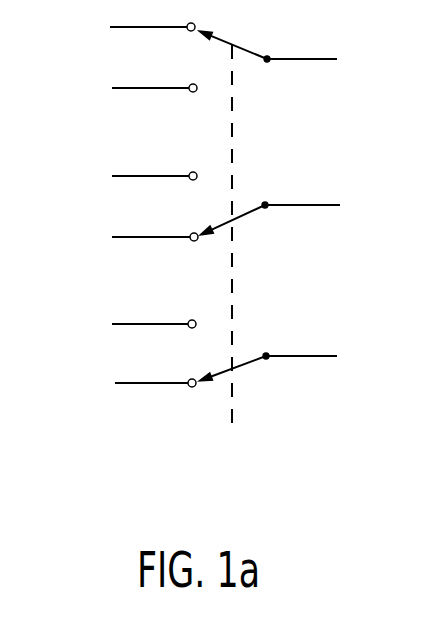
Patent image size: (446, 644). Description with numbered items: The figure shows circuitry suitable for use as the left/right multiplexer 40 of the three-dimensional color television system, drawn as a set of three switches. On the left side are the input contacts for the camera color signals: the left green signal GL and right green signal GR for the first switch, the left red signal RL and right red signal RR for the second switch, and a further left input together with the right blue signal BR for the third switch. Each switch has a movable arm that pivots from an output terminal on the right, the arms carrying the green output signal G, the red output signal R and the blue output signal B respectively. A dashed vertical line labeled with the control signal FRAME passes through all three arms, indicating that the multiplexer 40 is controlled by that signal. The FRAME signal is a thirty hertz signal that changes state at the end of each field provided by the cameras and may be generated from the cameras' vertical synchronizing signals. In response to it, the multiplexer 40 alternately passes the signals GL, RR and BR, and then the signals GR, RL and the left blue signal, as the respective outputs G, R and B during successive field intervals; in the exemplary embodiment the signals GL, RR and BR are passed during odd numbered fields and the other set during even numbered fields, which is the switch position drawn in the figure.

The left/right multiplexer 40 is at (216, 264).
The left green signal GL is at (152, 16).
The right green signal GR is at (154, 77).
The left red signal RL is at (154, 240).
The right red signal RR is at (155, 227).
The right blue signal BR is at (155, 375).
The green output signal G is at (268, 46).
The red output signal R is at (270, 209).
The blue output signal B is at (268, 357).
The FRAME signal FRAME is at (239, 257).